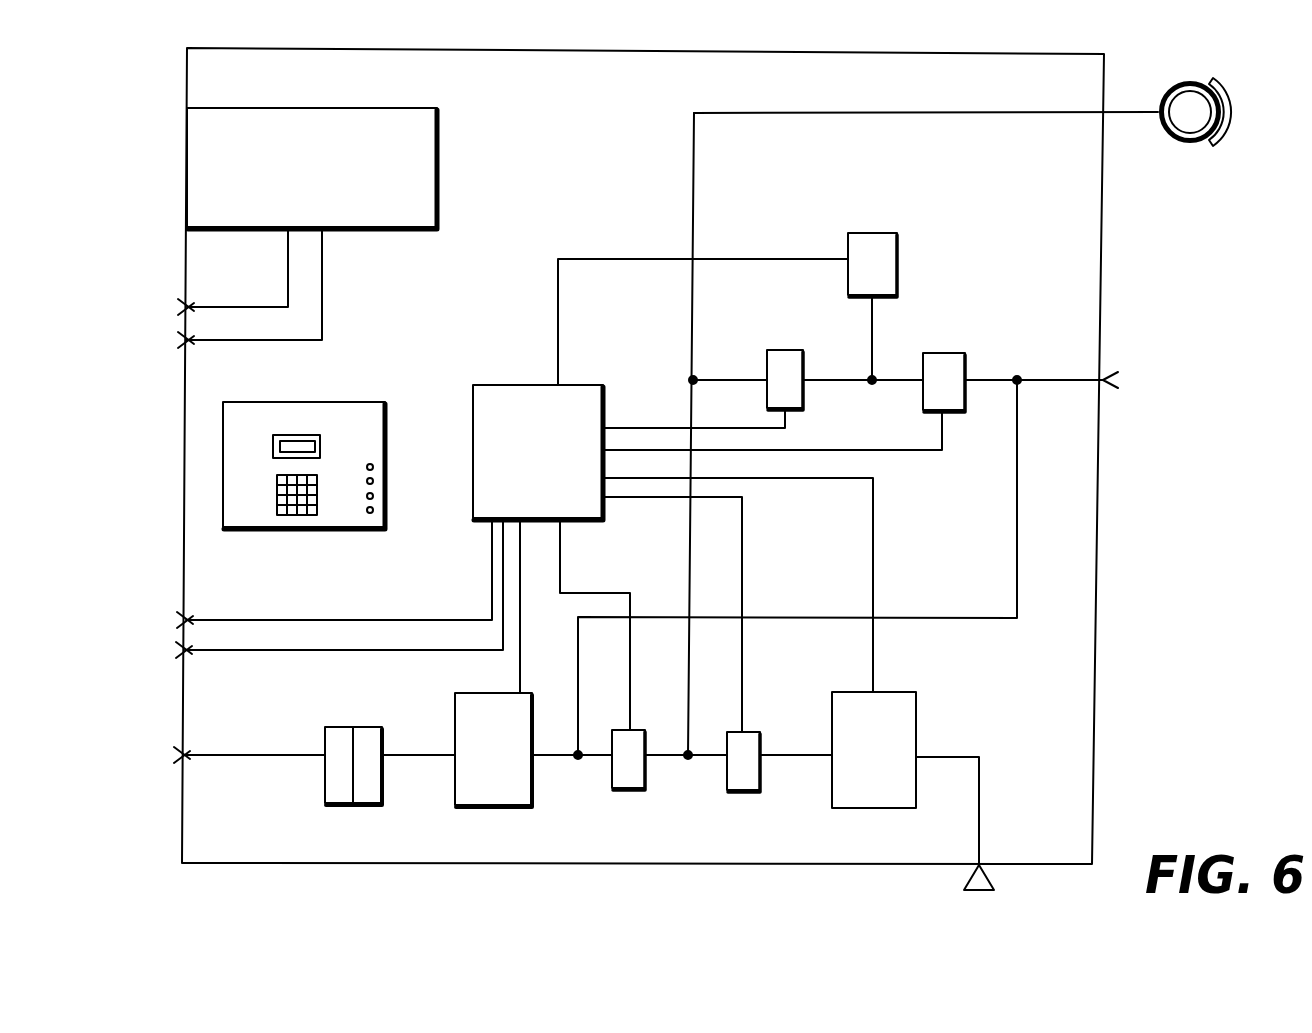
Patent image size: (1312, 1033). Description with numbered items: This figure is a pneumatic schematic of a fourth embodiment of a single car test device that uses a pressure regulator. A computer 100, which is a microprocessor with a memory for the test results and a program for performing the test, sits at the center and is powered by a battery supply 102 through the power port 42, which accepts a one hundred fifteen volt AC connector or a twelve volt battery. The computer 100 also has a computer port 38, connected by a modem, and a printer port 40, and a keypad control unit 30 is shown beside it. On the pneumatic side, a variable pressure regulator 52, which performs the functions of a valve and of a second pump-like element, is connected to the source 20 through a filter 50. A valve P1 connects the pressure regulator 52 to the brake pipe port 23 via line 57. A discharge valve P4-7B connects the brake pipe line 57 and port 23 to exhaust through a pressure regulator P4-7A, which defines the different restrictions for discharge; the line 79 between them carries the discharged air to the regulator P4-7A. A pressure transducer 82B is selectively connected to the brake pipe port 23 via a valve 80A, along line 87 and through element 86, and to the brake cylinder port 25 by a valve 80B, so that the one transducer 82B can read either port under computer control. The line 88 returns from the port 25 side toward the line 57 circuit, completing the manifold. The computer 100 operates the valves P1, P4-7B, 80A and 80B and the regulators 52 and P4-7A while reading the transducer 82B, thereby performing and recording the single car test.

The battery supply 102 is at (423, 165).
The computer 100 is at (500, 393).
The keypad control unit 30 is at (302, 440).
The power port 42 is at (143, 326).
The computer port 38 is at (149, 622).
The printer port 40 is at (157, 652).
The source 20 is at (158, 761).
The filter 50 is at (340, 786).
The variable pressure regulator 52 is at (482, 793).
The valve P1 is at (641, 775).
The line 57 is at (694, 196).
The discharge valve P4-7B is at (745, 792).
The line 79 is at (790, 752).
The pressure regulator P4-7A is at (908, 723).
The pressure transducer 82B is at (898, 275).
The valve 80A is at (785, 350).
The line 87 is at (835, 383).
The valve 86 is at (985, 378).
The valve 80B is at (960, 412).
The brake cylinder port 25 is at (1112, 378).
The line 88 is at (1017, 542).
The brake pipe port 23 is at (1113, 115).